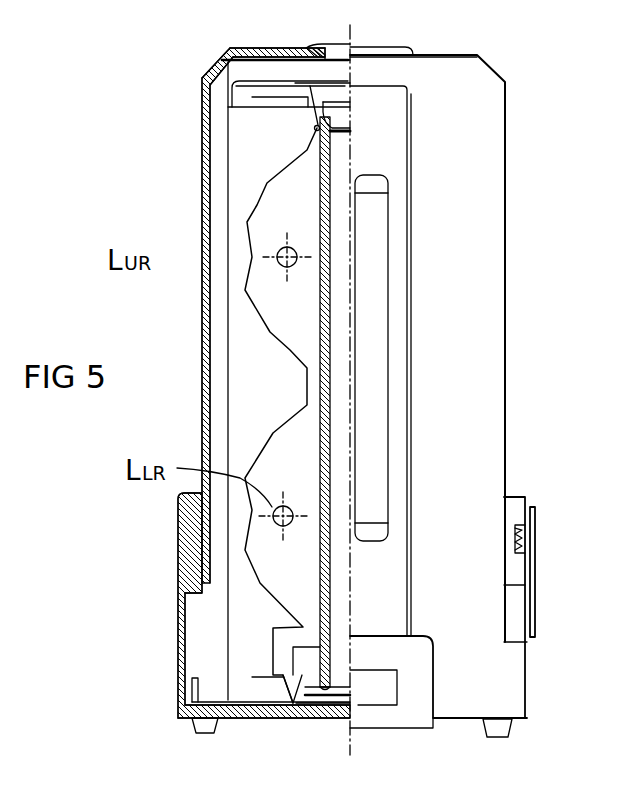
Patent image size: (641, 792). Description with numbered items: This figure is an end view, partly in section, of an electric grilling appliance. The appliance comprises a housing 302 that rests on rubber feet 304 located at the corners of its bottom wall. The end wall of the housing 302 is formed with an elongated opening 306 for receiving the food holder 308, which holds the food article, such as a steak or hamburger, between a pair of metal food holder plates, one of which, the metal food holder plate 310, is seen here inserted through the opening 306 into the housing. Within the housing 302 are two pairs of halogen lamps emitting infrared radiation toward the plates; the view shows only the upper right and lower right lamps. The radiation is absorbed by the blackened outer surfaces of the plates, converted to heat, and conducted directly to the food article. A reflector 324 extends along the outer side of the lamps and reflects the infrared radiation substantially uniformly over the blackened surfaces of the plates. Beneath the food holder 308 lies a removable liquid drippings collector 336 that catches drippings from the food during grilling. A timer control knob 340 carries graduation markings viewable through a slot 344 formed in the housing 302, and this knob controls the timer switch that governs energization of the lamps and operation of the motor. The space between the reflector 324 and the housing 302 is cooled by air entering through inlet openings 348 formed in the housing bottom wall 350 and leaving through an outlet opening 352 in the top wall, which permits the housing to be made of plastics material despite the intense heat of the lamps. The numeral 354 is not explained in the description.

The housing 302 is at (242, 383).
The rubber feet 304 is at (205, 740).
The elongated opening 306 is at (410, 165).
The food holder 308 is at (373, 288).
The metal food holder plate 310 is at (340, 128).
The reflector 324 is at (257, 205).
The liquid drippings collector 336 is at (282, 717).
The timer control knob 340 is at (537, 540).
The slot 344 is at (519, 578).
The inlet openings 348 is at (232, 730).
The housing bottom wall 350 is at (149, 605).
The outlet opening 352 is at (340, 47).
The top wall 354 is at (253, 50).